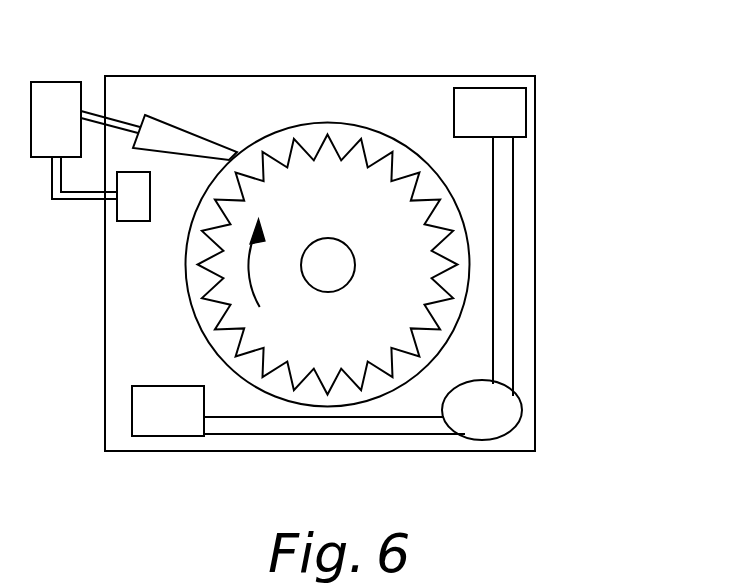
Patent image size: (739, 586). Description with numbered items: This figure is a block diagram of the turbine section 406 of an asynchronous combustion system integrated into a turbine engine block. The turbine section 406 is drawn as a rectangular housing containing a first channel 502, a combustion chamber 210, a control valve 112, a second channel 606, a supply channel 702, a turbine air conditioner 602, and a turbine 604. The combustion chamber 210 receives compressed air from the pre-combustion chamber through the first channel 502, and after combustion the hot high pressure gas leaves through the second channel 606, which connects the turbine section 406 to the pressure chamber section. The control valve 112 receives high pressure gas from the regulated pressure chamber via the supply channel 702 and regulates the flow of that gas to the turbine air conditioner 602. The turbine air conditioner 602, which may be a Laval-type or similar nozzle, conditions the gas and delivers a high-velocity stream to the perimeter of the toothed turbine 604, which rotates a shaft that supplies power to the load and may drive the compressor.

The control valve 112 is at (56, 82).
The turbine air conditioner 602 is at (172, 126).
The turbine 604 is at (348, 123).
The first channel 502 is at (490, 88).
The turbine section 406 is at (600, 188).
The supply channel 702 is at (117, 208).
The second channel 606 is at (132, 413).
The combustion chamber 210 is at (522, 405).